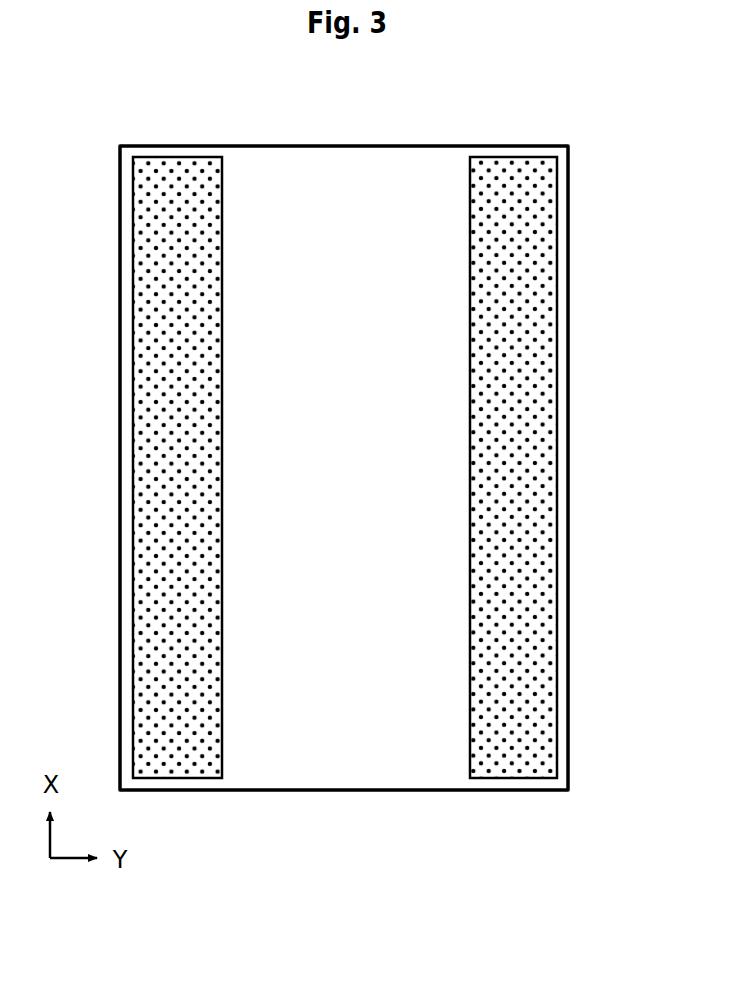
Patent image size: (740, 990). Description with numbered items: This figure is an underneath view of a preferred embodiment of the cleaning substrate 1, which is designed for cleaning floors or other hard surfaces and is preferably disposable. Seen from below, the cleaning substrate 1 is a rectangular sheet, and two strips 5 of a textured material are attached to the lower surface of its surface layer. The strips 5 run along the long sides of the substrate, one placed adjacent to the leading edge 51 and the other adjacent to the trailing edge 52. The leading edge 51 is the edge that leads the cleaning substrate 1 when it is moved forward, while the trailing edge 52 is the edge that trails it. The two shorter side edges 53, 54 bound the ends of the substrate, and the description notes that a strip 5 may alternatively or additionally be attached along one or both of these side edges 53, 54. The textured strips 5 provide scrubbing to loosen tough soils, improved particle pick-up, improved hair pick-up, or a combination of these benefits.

The cleaning substrate 1 is at (128, 113).
The strip of a textured material 5 is at (148, 685).
The leading edge 51 is at (113, 468).
The trailing edge 52 is at (576, 467).
The side edge 53 is at (341, 799).
The side edge 54 is at (357, 138).